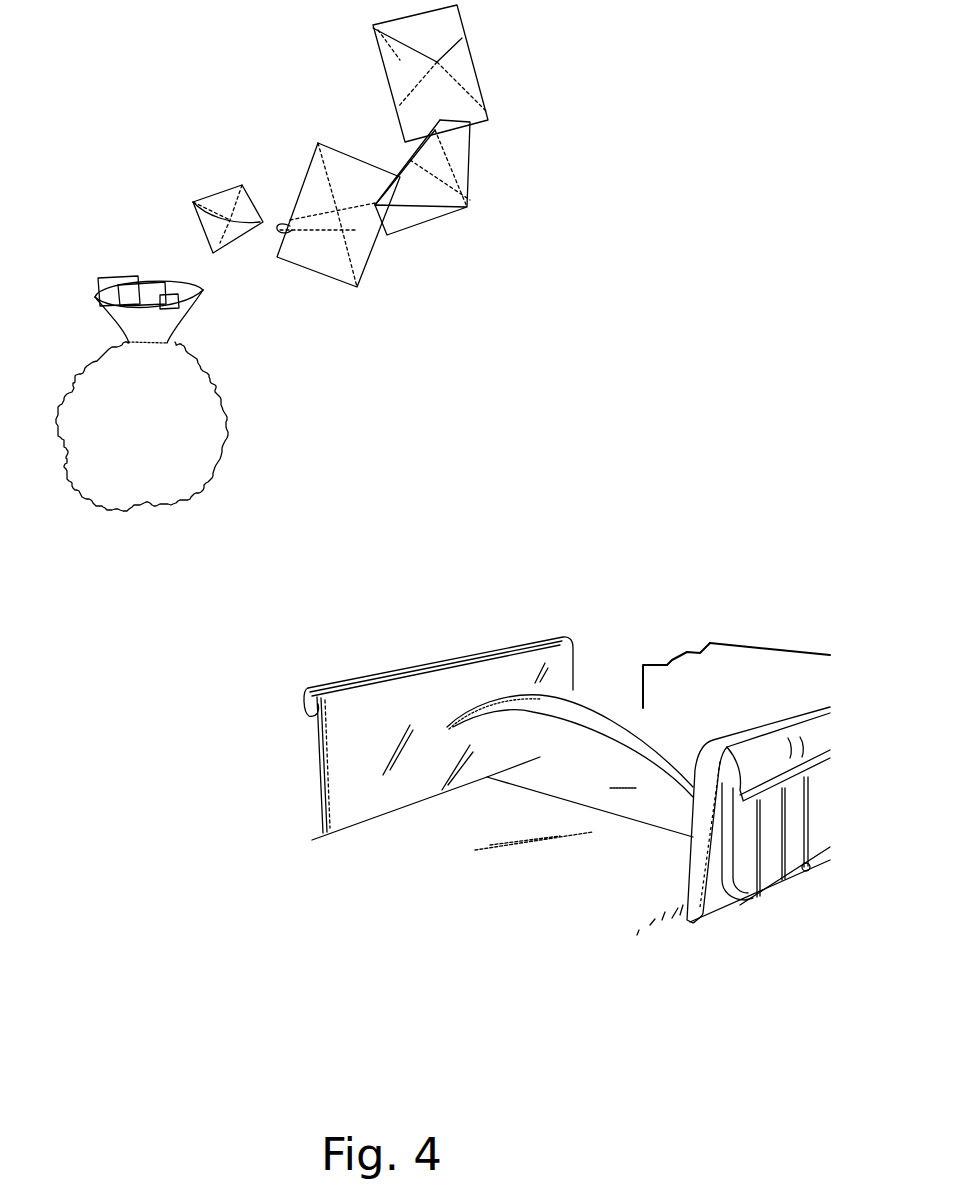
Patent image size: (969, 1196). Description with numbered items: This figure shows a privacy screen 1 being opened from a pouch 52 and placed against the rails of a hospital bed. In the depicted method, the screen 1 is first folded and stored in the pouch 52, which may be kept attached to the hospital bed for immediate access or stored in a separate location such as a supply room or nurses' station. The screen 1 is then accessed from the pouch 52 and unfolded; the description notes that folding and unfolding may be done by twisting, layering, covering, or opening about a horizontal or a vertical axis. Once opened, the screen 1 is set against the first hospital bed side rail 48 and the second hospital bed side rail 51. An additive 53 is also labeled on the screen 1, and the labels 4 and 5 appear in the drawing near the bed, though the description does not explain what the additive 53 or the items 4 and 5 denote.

The screen 1 is at (470, 55).
The tray 4 is at (766, 564).
The tray side rail 5 is at (733, 682).
The first hospital bed side rail 48 is at (387, 705).
The second hospital bed side rail 51 is at (730, 908).
The pouch 52 is at (168, 417).
The additive 53 is at (540, 703).